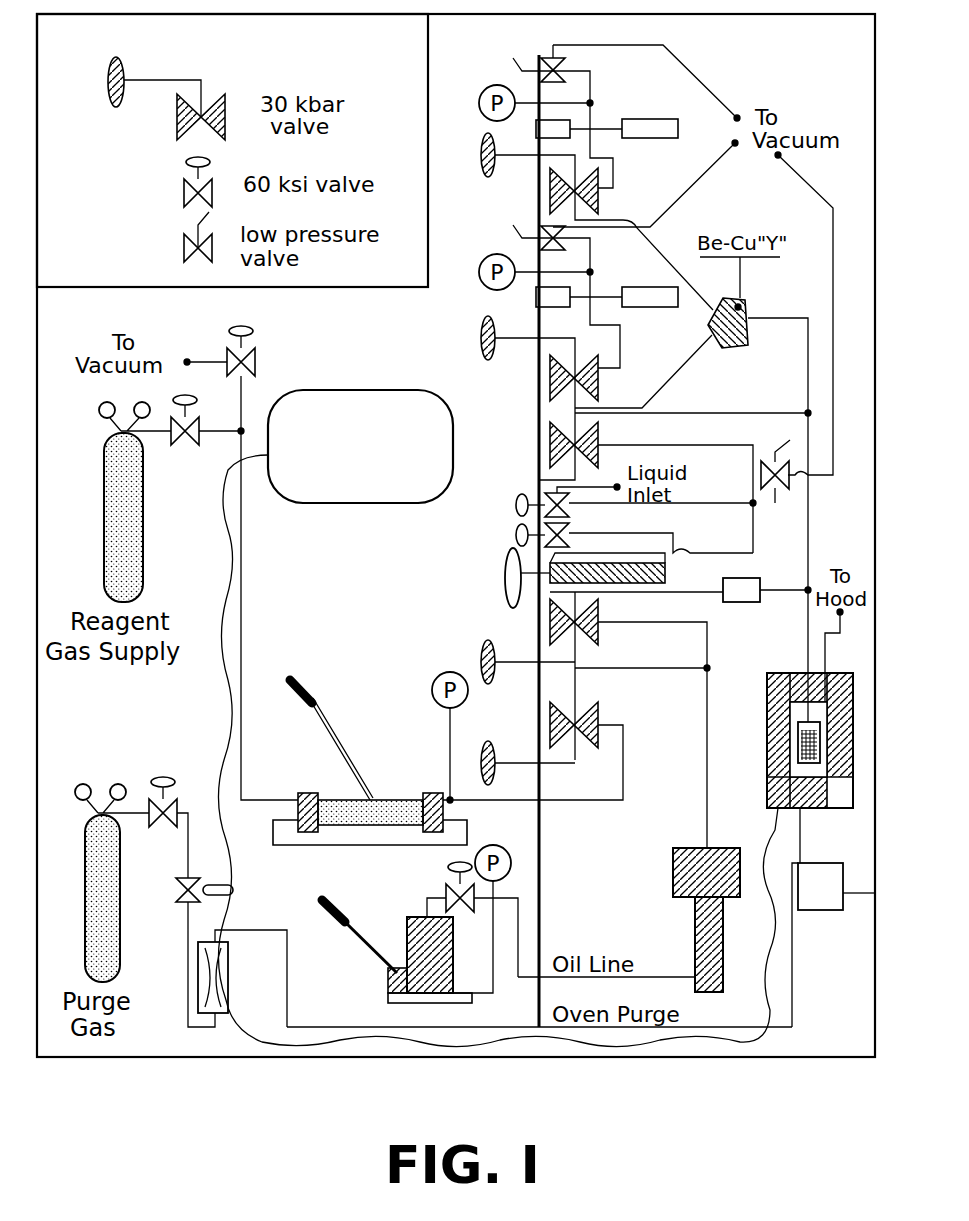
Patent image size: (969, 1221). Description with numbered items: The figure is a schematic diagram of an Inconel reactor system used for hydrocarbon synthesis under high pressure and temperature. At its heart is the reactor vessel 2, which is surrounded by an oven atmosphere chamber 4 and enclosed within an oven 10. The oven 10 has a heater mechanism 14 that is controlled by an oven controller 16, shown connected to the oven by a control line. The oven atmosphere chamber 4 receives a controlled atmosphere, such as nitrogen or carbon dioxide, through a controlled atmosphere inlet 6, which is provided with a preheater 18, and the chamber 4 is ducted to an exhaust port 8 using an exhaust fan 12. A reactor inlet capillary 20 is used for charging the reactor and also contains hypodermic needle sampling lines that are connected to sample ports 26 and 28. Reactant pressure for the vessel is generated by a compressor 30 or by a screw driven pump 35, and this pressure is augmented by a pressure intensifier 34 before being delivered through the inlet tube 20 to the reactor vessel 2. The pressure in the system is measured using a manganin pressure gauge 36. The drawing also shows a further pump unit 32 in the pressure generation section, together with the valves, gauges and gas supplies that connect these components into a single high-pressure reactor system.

The reactor vessel 2 is at (820, 752).
The oven atmosphere chamber 4 is at (820, 712).
The controlled atmosphere inlet 6 is at (802, 843).
The exhaust port 8 is at (826, 662).
The oven 10 is at (838, 790).
The exhaust fan 12 is at (875, 553).
The heater mechanism 14 is at (820, 738).
The oven controller 16 is at (498, 718).
The preheater 18 is at (845, 890).
The reactor inlet capillary 20 is at (812, 545).
The sample port 26 is at (535, 160).
The sample port 28 is at (536, 345).
The compressor 30 is at (393, 800).
The hydraulic pump 32 is at (407, 945).
The pressure intensifier 34 is at (680, 877).
The screw driven pump 35 is at (548, 590).
The manganin pressure gauge 36 is at (745, 602).